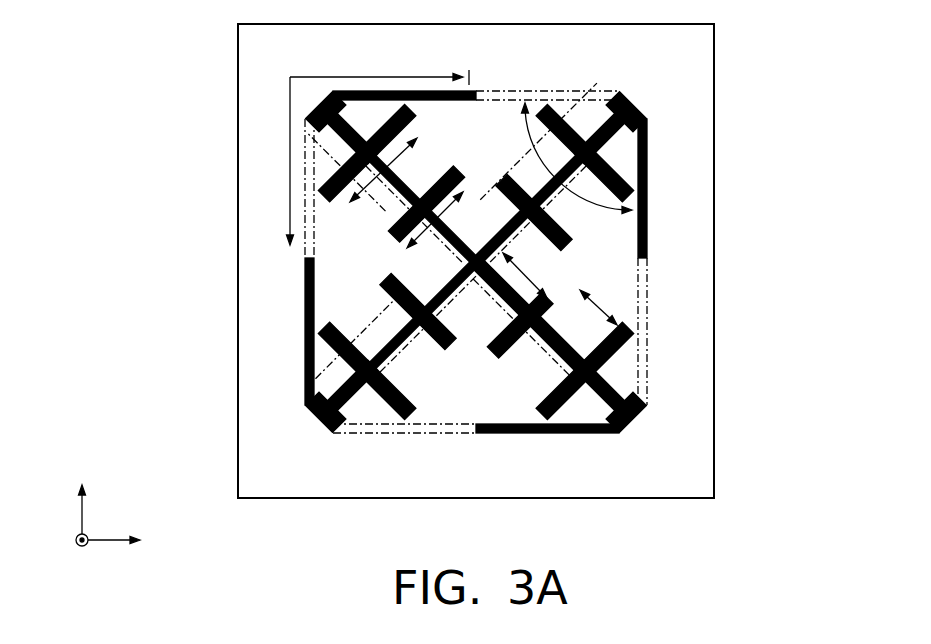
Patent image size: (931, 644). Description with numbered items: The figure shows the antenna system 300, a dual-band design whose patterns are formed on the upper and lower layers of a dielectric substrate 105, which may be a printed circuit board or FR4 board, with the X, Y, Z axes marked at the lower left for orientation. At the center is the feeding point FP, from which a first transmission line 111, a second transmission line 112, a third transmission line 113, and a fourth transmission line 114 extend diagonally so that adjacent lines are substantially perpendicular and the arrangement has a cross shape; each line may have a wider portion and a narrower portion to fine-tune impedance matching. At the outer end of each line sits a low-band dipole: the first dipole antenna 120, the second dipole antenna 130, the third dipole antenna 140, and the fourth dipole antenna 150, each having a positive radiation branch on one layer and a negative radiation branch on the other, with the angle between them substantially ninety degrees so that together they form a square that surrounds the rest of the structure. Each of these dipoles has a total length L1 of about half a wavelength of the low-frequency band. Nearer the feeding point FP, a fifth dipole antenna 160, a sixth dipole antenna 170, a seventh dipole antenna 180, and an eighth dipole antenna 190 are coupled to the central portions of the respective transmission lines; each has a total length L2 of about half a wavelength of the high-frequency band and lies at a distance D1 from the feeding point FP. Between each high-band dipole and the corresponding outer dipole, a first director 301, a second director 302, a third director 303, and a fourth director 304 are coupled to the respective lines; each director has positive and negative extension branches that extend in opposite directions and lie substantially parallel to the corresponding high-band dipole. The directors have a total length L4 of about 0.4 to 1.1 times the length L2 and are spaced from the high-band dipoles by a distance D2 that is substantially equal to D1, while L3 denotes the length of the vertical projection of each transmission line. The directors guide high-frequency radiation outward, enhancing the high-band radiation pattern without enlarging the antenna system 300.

The antenna system 300 is at (88, 17).
The dielectric substrate 105 is at (716, 35).
The first transmission line 111 is at (336, 98).
The second transmission line 112 is at (636, 102).
The third transmission line 113 is at (462, 403).
The fourth transmission line 114 is at (330, 352).
The first dipole antenna 120 is at (404, 91).
The second dipole antenna 130 is at (545, 91).
The third dipole antenna 140 is at (642, 312).
The fourth dipole antenna 150 is at (335, 345).
The fifth dipole antenna 160 is at (443, 156).
The sixth dipole antenna 170 is at (600, 236).
The seventh dipole antenna 180 is at (481, 428).
The eighth dipole antenna 190 is at (365, 330).
The first director 301 is at (345, 150).
The second director 302 is at (598, 170).
The third director 303 is at (605, 350).
The fourth director 304 is at (358, 345).
The feeding point FP is at (478, 270).
The total length of each of the first through fourth dipole antennas L1 is at (290, 188).
The total length of each of the fifth through eighth dipole antennas L2 is at (417, 237).
The total length of the vertical projection of each transmission line L3 is at (362, 436).
The total length of each director L4 is at (370, 195).
The distance between the feeding point and each of the fifth through eighth dipole a D1 is at (538, 272).
The distance from each director to the corresponding high-band dipole antenna D2 is at (607, 301).
The X axis X is at (126, 546).
The Y axis Y is at (81, 491).
The Z axis Z is at (82, 560).